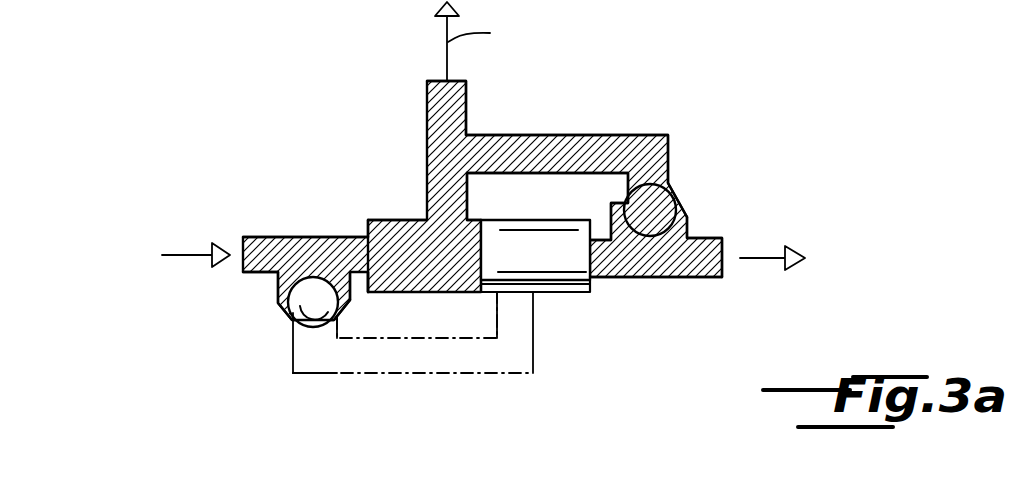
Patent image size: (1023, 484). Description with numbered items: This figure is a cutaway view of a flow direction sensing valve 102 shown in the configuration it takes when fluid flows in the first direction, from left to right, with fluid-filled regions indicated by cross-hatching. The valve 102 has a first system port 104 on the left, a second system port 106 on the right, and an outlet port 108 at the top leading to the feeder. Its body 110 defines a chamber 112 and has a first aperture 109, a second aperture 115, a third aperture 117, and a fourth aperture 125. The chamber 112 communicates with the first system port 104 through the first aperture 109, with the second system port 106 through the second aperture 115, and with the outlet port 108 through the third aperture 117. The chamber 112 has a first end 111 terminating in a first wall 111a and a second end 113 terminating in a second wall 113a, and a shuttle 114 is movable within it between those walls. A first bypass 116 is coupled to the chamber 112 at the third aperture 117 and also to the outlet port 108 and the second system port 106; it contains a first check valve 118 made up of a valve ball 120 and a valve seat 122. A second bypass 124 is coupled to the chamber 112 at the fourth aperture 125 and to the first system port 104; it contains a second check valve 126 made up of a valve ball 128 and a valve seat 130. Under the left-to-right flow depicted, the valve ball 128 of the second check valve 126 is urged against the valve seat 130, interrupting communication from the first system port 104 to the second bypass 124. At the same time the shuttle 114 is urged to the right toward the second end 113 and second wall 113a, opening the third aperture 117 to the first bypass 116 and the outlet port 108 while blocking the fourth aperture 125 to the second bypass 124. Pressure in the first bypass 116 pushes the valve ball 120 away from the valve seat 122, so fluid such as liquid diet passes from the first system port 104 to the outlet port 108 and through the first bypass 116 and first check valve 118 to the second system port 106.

The flow direction sensing valve 102 is at (238, 140).
The first system port 104 is at (242, 262).
The second system port 106 is at (722, 276).
The outlet port 108 is at (441, 80).
The first aperture 109 is at (347, 258).
The body 110 is at (403, 217).
The first end 111 is at (372, 217).
The first wall 111a is at (352, 292).
The chamber 112 is at (400, 235).
The second end 113 is at (562, 219).
The second wall 113a is at (590, 284).
The shuttle 114 is at (552, 285).
The second aperture 115 is at (600, 262).
The first bypass 116 is at (547, 147).
The third aperture 117 is at (485, 205).
The first check valve 118 is at (680, 178).
The valve ball 120 is at (687, 229).
The valve seat 122 is at (675, 197).
The second bypass 124 is at (468, 366).
The fourth aperture 125 is at (514, 298).
The second check valve 126 is at (306, 340).
The valve ball 128 is at (291, 318).
The valve seat 130 is at (338, 345).